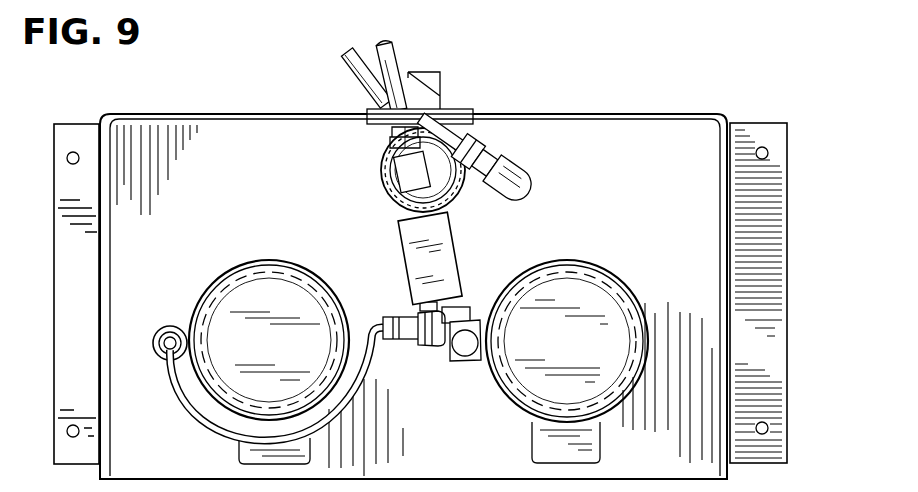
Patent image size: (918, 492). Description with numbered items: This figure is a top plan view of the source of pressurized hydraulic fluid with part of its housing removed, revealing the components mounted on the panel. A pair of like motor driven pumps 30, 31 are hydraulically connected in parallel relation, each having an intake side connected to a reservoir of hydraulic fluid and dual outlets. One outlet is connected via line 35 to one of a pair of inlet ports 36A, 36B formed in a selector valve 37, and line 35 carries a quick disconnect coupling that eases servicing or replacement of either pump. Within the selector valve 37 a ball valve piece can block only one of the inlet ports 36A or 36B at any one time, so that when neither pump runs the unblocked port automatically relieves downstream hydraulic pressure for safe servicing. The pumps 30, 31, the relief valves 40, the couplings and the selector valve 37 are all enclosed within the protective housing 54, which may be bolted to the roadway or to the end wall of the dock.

The motor driven pump 30 is at (233, 298).
The motor driven pump 31 is at (592, 272).
The line 35 is at (210, 416).
The inlet port 36A is at (374, 345).
The inlet port 36B is at (464, 290).
The selector valve 37 is at (444, 256).
The relief valve 40 is at (556, 434).
The protective housing 54 is at (733, 277).